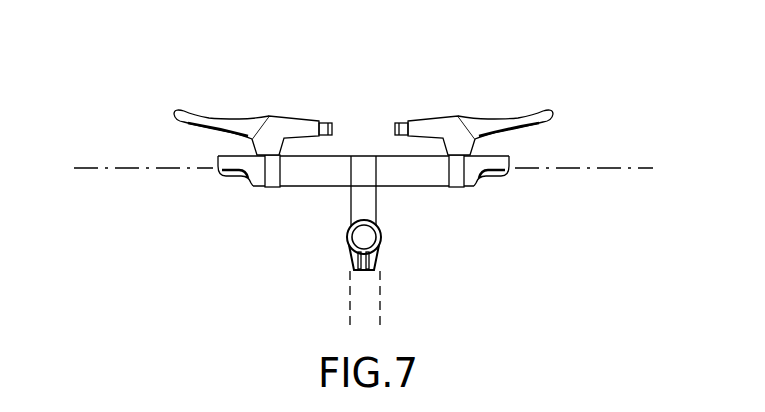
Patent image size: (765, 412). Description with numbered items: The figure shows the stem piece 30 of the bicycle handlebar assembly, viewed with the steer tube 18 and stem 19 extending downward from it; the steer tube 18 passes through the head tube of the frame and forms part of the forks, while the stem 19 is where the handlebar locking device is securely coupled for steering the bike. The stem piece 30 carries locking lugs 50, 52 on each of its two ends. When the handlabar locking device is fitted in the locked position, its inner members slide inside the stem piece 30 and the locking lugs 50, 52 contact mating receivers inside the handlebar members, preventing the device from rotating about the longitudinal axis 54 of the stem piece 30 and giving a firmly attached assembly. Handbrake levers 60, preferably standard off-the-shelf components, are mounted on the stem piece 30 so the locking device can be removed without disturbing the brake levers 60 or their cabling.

The steer tube 18 is at (372, 273).
The stem 19 is at (370, 197).
The stem piece 30 is at (365, 178).
The locking lug 50 is at (219, 148).
The locking lug 52 is at (488, 146).
The longitudinal axis 54 is at (130, 160).
The handbrake levers 60 is at (422, 110).